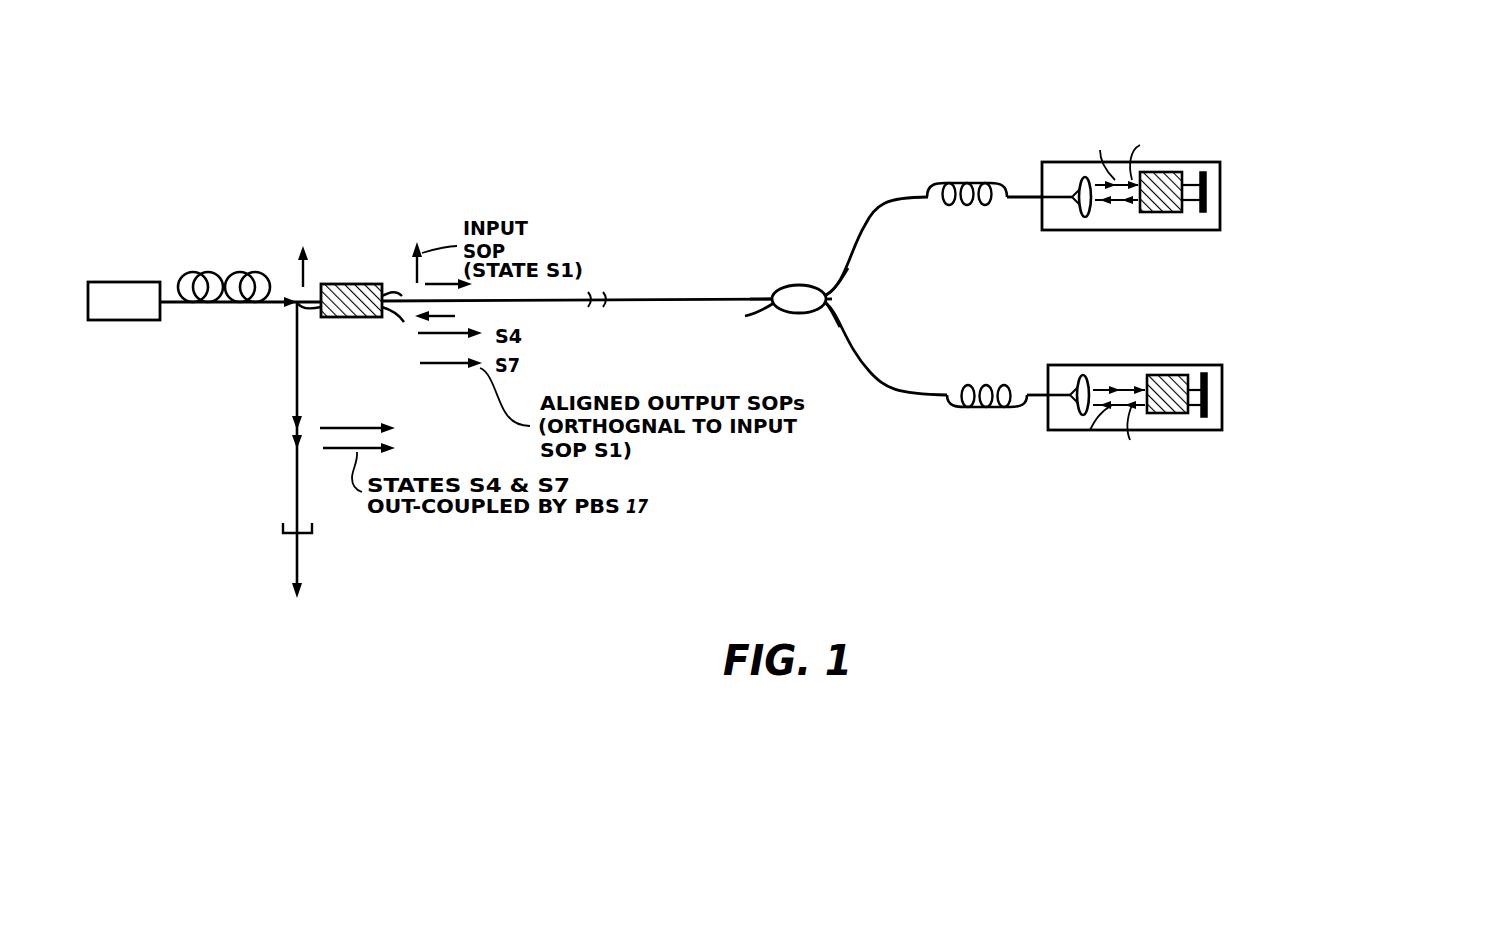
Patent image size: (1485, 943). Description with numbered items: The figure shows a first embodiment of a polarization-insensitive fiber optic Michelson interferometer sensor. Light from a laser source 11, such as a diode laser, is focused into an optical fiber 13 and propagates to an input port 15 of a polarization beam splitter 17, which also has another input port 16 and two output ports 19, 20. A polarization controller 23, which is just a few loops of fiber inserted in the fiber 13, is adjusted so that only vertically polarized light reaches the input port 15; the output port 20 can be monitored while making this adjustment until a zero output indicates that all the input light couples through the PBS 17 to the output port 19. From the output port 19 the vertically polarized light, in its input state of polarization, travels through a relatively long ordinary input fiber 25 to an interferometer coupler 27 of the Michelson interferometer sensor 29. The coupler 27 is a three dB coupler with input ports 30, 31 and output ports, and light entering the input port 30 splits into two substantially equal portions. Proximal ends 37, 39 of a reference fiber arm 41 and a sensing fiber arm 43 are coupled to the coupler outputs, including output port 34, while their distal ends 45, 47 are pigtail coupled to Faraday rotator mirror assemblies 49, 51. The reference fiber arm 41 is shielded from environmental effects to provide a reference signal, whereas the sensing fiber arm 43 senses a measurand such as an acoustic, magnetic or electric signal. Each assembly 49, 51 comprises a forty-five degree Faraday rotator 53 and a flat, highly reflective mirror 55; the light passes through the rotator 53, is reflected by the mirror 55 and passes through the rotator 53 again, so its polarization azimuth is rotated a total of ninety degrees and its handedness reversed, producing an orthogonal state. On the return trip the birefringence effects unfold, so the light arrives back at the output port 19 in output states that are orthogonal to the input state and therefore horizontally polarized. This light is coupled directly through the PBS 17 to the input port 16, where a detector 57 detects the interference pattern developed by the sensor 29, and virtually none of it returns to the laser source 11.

The laser source 11 is at (134, 322).
The optical fiber 13 is at (176, 302).
The input port 15 is at (310, 293).
The input port 16 is at (300, 308).
The polarization beam splitter 17 is at (350, 284).
The output port 19 is at (384, 295).
The output port 20 is at (392, 315).
The polarization controller 23 is at (201, 262).
The input fiber 25 is at (670, 298).
The interferometer coupler 27 is at (780, 285).
The fiber optic Michelson interferometer sensor 29 is at (1099, 88).
The input port 30 is at (766, 297).
The input port 31 is at (770, 306).
The output port 34 is at (828, 299).
The proximal end 37 is at (844, 285).
The proximal end 39 is at (820, 308).
The reference fiber arm 41 is at (970, 186).
The sensing fiber arm 43 is at (994, 408).
The distal end 45 is at (1022, 200).
The distal end 47 is at (1037, 390).
The Faraday rotator mirror assembly 49 is at (1222, 150).
The Faraday rotator mirror assembly 51 is at (1216, 447).
The 45° Faraday rotator 53 is at (1163, 376).
The mirror 55 is at (1221, 232).
The detector 57 is at (283, 530).